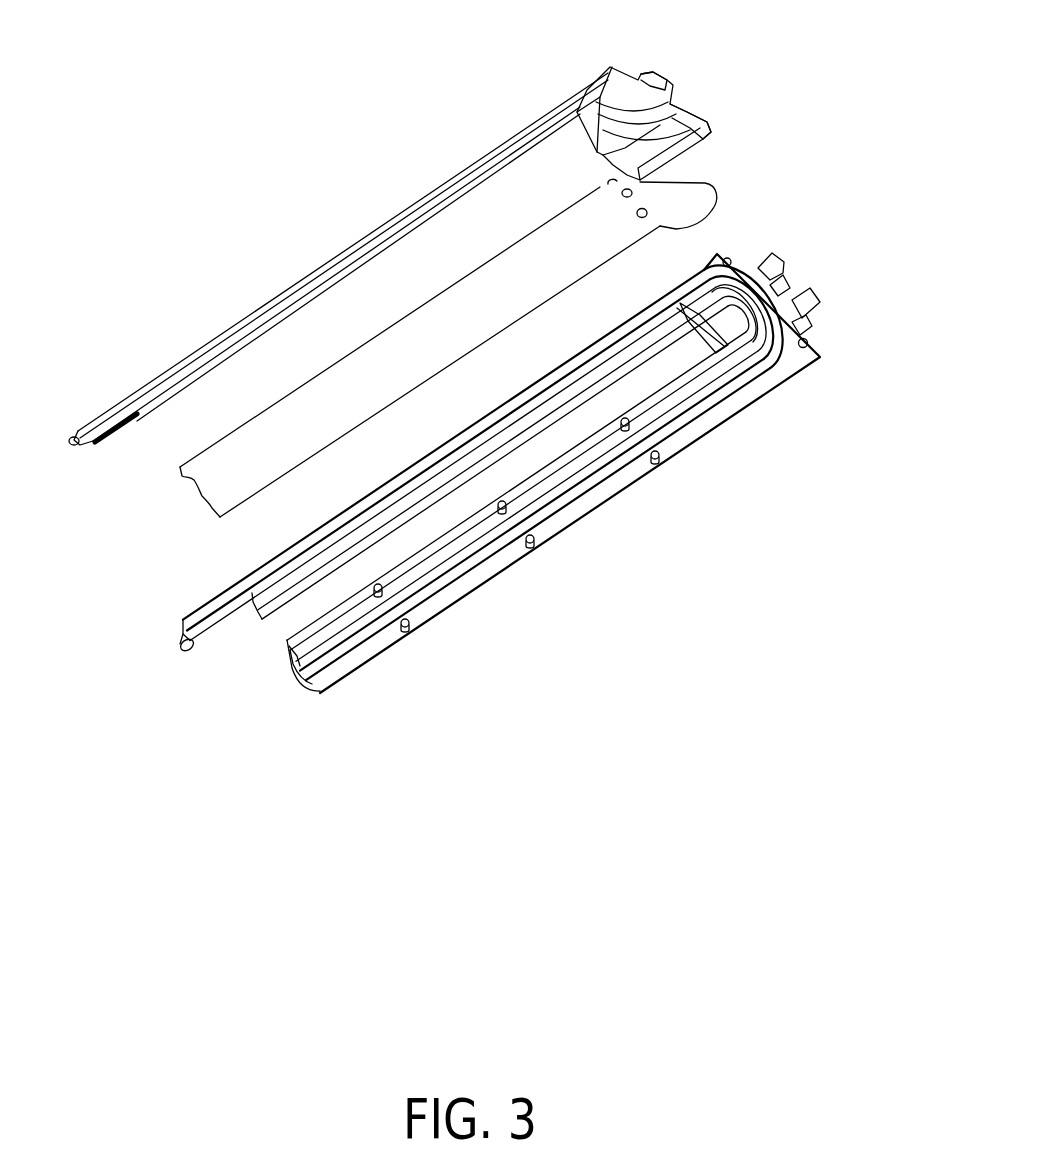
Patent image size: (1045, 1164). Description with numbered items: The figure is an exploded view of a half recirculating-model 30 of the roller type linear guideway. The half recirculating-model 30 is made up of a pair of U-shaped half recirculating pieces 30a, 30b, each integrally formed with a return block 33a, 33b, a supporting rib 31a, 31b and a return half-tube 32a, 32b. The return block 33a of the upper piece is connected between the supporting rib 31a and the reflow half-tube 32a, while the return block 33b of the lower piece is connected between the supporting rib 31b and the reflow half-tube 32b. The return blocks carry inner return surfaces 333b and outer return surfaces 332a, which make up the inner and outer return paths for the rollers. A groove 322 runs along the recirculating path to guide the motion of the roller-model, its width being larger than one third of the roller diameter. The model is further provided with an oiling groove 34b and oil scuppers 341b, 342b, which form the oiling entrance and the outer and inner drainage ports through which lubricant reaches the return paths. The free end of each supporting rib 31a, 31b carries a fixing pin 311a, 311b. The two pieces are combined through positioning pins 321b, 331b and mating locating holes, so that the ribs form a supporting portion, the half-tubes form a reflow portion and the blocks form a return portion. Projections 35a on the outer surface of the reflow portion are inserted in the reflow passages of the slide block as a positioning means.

The half recirculating-model 30 is at (329, 133).
The U-shaped half recirculating piece 30a is at (637, 77).
The U-shaped half recirculating piece 30b is at (812, 372).
The supporting rib 31a is at (333, 267).
The supporting rib 31b is at (263, 568).
The fixing pin 311a is at (72, 441).
The fixing pin 311b is at (190, 653).
The return half-tube 32a is at (250, 438).
The return half-tube 32b is at (626, 478).
The positioning pin 321b is at (540, 541).
The groove 322 is at (290, 688).
The return block 33a is at (662, 76).
The return block 33b is at (780, 272).
The positioning pin 331b is at (808, 345).
The outer return surface 332a is at (692, 110).
The inner return surface 333b is at (757, 385).
The oiling groove 34b is at (757, 260).
The oil scupper 341b is at (803, 294).
The oil scupper 342b is at (690, 293).
The projection 35a is at (646, 216).